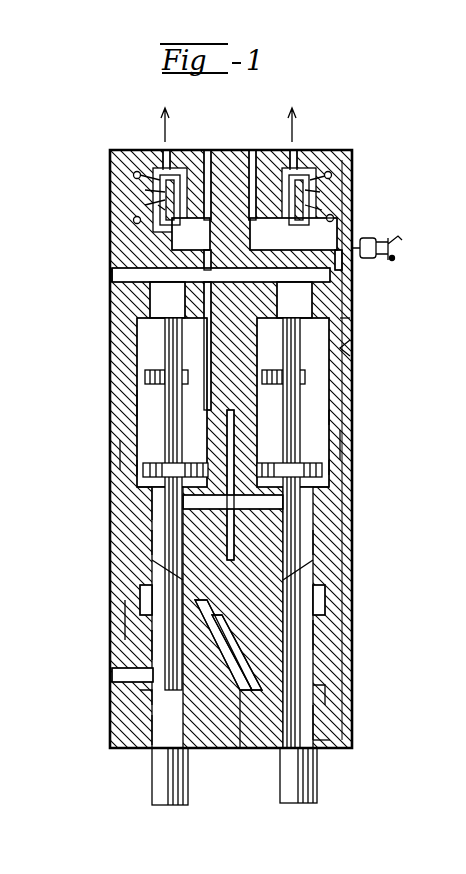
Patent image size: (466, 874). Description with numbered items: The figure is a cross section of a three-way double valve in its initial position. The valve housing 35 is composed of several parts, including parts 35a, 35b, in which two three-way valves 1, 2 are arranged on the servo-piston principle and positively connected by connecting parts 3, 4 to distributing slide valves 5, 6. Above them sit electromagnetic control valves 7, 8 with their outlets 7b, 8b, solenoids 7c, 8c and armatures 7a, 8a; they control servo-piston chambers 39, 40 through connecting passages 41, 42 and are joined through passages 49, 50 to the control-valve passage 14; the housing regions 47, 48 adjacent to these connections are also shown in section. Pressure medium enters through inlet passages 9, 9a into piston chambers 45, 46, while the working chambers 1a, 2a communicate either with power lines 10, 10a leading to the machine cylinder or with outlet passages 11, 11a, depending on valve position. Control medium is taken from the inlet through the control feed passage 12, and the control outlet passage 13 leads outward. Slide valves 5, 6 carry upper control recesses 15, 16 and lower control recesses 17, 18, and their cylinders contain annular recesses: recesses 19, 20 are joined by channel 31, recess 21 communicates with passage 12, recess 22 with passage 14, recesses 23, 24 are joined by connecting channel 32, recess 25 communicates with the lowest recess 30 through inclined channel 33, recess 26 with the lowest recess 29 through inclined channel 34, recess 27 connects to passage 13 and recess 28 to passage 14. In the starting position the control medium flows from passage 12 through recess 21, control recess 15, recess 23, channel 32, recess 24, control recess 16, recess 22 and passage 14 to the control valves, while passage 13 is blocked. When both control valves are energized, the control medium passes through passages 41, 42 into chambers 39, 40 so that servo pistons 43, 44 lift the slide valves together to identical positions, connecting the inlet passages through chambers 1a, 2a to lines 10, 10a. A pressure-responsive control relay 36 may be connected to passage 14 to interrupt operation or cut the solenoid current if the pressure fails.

The three-way valve 1 is at (140, 388).
The working chamber 1a is at (135, 352).
The three-way valve 2 is at (350, 393).
The working chamber 2a is at (350, 372).
The connecting part 3 is at (150, 490).
The connecting part 4 is at (345, 499).
The distributing slide valve 5 is at (168, 800).
The distributing slide valve 6 is at (303, 774).
The electromagnetic control valve 7 is at (150, 172).
The armature 7a is at (148, 190).
The outlet 7b is at (154, 150).
The solenoid 7c is at (133, 175).
The electromagnetic control valve 8 is at (300, 160).
The armature 8a is at (320, 190).
The outlet 8b is at (300, 150).
The solenoid 8c is at (350, 167).
The inlet passage 9 is at (97, 411).
The inlet passage 9a is at (330, 421).
The power line 10 is at (353, 348).
The power line 10a is at (350, 322).
The outlet passage 11 is at (150, 294).
The outlet passage 11a is at (345, 276).
The control feed passage 12 is at (165, 445).
The control outlet passage 13 is at (83, 660).
The control-valve passage 14 is at (150, 273).
The upper control recess 15 is at (150, 576).
The upper control recess 16 is at (320, 579).
The lower control recess 17 is at (150, 727).
The lower control recess 18 is at (310, 714).
The annular recess 19 is at (150, 505).
The annular recess 20 is at (245, 507).
The annular recess 21 is at (150, 540).
The annular recess 22 is at (300, 559).
The annular recess 23 is at (160, 591).
The annular recess 24 is at (335, 604).
The annular recess 25 is at (150, 642).
The annular recess 26 is at (315, 633).
The annular recess 27 is at (150, 699).
The annular recess 28 is at (305, 694).
The annular recess 29 is at (140, 752).
The annular recess 30 is at (320, 729).
The channel 31 is at (165, 521).
The connecting channel 32 is at (140, 616).
The inclined channel 33 is at (226, 748).
The inclined channel 34 is at (251, 748).
The passage 35 is at (240, 752).
The valve housing part 35a is at (158, 205).
The valve housing part 35b is at (140, 412).
The pressure-responsive control relay 36 is at (385, 240).
The servo-piston chamber 39 is at (165, 471).
The servo-piston chamber 40 is at (340, 482).
The connecting passage 41 is at (203, 150).
The connecting passage 42 is at (255, 150).
The servo piston 43 is at (150, 466).
The servo piston 44 is at (330, 469).
The piston chamber 45 is at (128, 458).
The piston chamber 46 is at (320, 441).
The pilot chamber 47 is at (165, 305).
The pilot chamber 48 is at (300, 302).
The passage 49 is at (175, 246).
The passage 50 is at (345, 226).